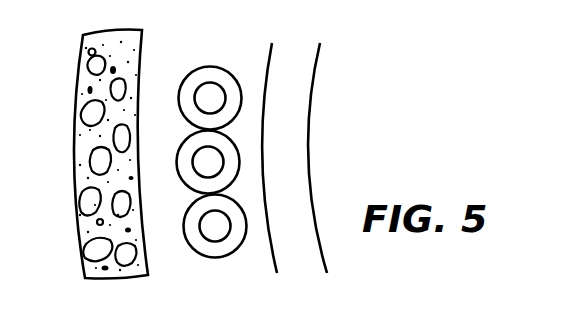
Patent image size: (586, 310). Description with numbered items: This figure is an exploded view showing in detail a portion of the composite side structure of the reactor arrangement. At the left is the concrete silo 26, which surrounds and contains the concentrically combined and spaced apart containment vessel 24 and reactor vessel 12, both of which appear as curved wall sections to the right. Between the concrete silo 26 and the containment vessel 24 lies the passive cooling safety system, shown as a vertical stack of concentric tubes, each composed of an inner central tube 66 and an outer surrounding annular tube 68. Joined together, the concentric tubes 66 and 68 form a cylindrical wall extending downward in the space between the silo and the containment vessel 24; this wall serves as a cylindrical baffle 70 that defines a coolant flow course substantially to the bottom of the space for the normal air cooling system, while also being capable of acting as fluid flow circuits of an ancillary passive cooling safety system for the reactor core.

The reactor vessel 12 is at (313, 113).
The containment vessel 24 is at (263, 168).
The concrete silo 26 is at (147, 233).
The inner central tube 66 is at (204, 84).
The outer surrounding annular tube 68 is at (238, 79).
The cylindrical baffle 70 is at (223, 257).